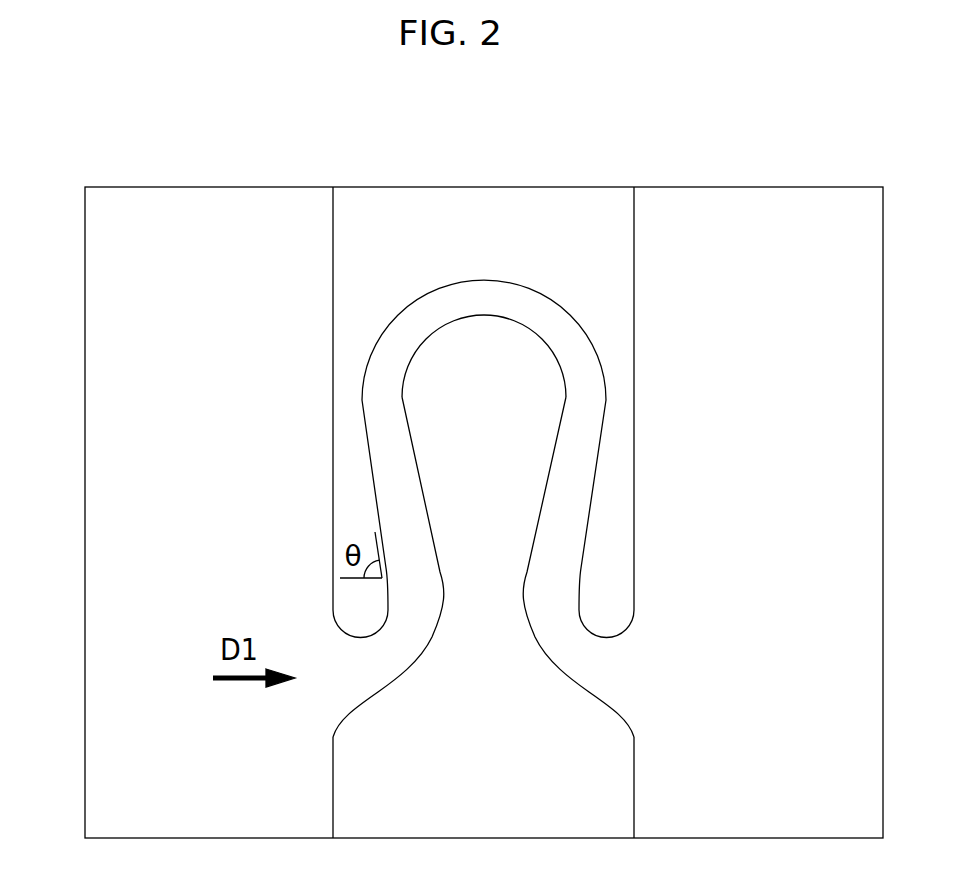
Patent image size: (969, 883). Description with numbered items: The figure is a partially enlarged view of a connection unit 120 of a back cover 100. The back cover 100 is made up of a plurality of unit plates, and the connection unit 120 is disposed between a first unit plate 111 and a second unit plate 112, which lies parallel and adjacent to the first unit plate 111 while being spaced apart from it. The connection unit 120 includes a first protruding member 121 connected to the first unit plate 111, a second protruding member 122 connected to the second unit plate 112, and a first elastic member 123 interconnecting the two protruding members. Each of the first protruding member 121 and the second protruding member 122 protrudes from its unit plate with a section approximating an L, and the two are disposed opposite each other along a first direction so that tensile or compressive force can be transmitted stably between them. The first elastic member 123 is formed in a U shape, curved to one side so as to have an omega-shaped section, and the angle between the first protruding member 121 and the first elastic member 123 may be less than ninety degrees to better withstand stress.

The back cover 100 is at (78, 138).
The first unit plate 111 is at (208, 220).
The second unit plate 112 is at (770, 217).
The connection unit 120 is at (538, 459).
The first protruding member 121 is at (407, 635).
The second protruding member 122 is at (560, 635).
The first elastic member 123 is at (480, 297).